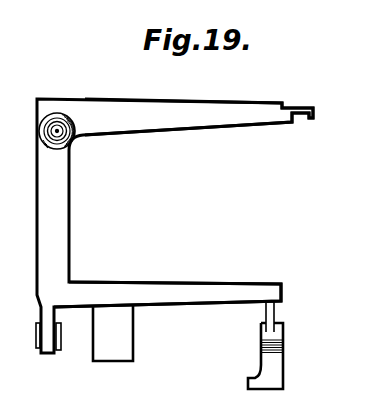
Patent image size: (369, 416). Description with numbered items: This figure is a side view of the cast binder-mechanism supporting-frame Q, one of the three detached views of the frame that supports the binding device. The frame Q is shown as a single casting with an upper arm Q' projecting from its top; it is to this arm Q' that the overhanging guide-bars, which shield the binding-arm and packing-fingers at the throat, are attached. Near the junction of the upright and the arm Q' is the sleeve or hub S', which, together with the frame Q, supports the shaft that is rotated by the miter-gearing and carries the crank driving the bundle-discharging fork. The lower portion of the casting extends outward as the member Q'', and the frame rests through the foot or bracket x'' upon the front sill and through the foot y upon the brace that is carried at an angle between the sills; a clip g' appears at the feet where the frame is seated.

The binder-mechanism supporting-frame Q is at (175, 226).
The arm of the binder-mechanism supporting-frame Q' is at (199, 117).
The lower bar of bracket Q'' is at (167, 285).
The sleeve or hub S' is at (67, 129).
The foot or bracket x'' is at (113, 333).
The guide clip g' is at (159, 338).
The foot y is at (273, 345).